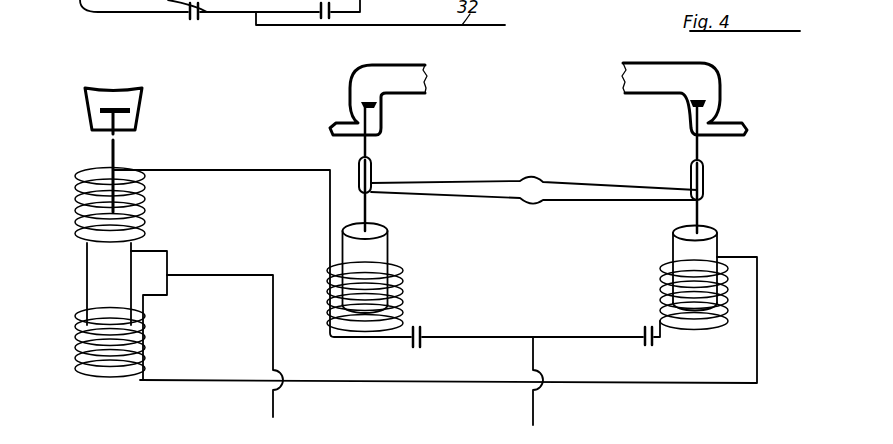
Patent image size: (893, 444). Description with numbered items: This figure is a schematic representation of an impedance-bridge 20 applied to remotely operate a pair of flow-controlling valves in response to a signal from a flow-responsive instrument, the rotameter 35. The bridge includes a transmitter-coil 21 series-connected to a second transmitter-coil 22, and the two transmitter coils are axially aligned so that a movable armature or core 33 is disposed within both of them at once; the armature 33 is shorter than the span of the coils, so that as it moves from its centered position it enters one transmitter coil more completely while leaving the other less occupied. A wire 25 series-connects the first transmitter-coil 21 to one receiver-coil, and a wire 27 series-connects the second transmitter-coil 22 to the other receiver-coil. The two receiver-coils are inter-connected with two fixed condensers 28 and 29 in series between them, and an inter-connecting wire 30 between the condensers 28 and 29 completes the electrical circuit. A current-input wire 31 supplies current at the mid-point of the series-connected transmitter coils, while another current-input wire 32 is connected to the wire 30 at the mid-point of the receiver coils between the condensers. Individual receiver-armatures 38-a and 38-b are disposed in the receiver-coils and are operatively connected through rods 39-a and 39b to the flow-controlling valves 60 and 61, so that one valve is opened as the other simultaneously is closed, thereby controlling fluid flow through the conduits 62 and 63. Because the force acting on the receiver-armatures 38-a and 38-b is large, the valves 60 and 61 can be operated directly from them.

The impedance-bridge 20 is at (278, 251).
The transmitter-coil 21 is at (143, 208).
The second transmitter-coil 22 is at (143, 325).
The wire 25 is at (270, 172).
The wire 27 is at (403, 383).
The fixed condenser 28 is at (422, 338).
The fixed condenser 29 is at (638, 334).
The inter-connecting wire 30 is at (500, 335).
The current-input wire 31 is at (280, 342).
The current-input wire 32 is at (535, 410).
The movable armature or core 33 is at (95, 277).
The rotameter 35 is at (180, 118).
The receiver-armature 38-a is at (378, 253).
The receiver-armature 38-b is at (683, 253).
The rod 39-a is at (371, 218).
The rod 39b is at (704, 217).
The flow-controlling valve 60 is at (706, 101).
The flow-controlling valve 61 is at (360, 100).
The conduit 62 is at (380, 102).
The conduit 63 is at (662, 62).